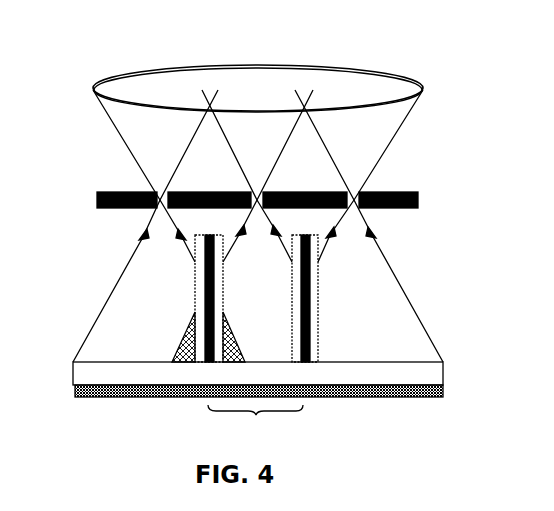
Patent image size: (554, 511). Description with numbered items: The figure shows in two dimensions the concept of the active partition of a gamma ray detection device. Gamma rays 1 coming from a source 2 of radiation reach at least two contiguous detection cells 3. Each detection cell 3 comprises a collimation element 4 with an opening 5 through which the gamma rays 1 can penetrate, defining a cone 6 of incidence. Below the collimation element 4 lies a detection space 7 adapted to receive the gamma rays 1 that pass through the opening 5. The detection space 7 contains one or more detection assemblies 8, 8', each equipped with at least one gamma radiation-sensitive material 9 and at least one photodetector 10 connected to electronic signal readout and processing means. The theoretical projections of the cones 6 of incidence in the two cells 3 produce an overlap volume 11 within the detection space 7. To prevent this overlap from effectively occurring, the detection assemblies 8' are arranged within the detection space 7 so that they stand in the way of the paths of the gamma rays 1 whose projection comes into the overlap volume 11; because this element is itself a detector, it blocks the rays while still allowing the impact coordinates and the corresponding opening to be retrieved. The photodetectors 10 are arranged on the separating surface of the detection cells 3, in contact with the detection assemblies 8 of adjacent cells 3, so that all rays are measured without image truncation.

The gamma ray 1 is at (120, 121).
The source of radiation 2 is at (168, 84).
The detection cell 3 is at (255, 424).
The collimation element 4 is at (402, 192).
The opening 5 is at (160, 190).
The cone of incidence of the gamma rays 6 is at (122, 262).
The detection space 7 is at (257, 298).
The assembly for the detection of gamma rays 8 is at (369, 226).
The assembly for the detection (active partition) of gamma rays 8' is at (370, 199).
The gamma radiation-sensitive material 9 is at (436, 373).
The photodetectors 10 is at (306, 238).
The overlap volume 11 is at (178, 333).